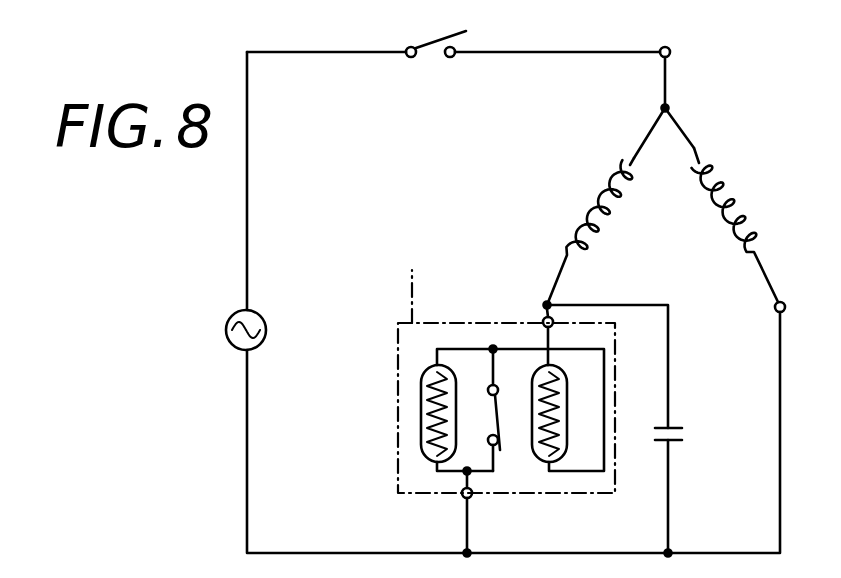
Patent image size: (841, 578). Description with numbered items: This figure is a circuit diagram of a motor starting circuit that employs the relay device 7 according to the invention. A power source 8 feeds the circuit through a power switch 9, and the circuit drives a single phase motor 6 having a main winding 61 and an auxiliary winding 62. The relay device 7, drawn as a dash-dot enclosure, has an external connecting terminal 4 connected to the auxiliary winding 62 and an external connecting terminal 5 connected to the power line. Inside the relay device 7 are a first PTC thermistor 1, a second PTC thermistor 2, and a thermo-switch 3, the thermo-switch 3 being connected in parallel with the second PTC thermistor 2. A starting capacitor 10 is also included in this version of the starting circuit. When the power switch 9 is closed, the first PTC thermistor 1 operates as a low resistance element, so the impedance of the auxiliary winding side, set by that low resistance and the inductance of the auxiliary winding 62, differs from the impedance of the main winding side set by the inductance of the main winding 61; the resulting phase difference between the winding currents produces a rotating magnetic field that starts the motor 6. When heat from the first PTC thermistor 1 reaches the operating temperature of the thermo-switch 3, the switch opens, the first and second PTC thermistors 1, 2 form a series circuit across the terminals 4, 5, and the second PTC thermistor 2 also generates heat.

The first PTC thermistor 1 is at (567, 405).
The second PTC thermistor 2 is at (421, 390).
The thermo-switch 3 is at (489, 400).
The external connecting terminal 4 is at (545, 318).
The external connecting terminal 5 is at (462, 497).
The single phase motor 6 is at (666, 189).
The main winding 61 is at (727, 184).
The auxiliary winding 62 is at (606, 179).
The relay device 7 is at (506, 367).
The power source 8 is at (265, 317).
The power switch 9 is at (426, 54).
The starting capacitor 10 is at (684, 436).